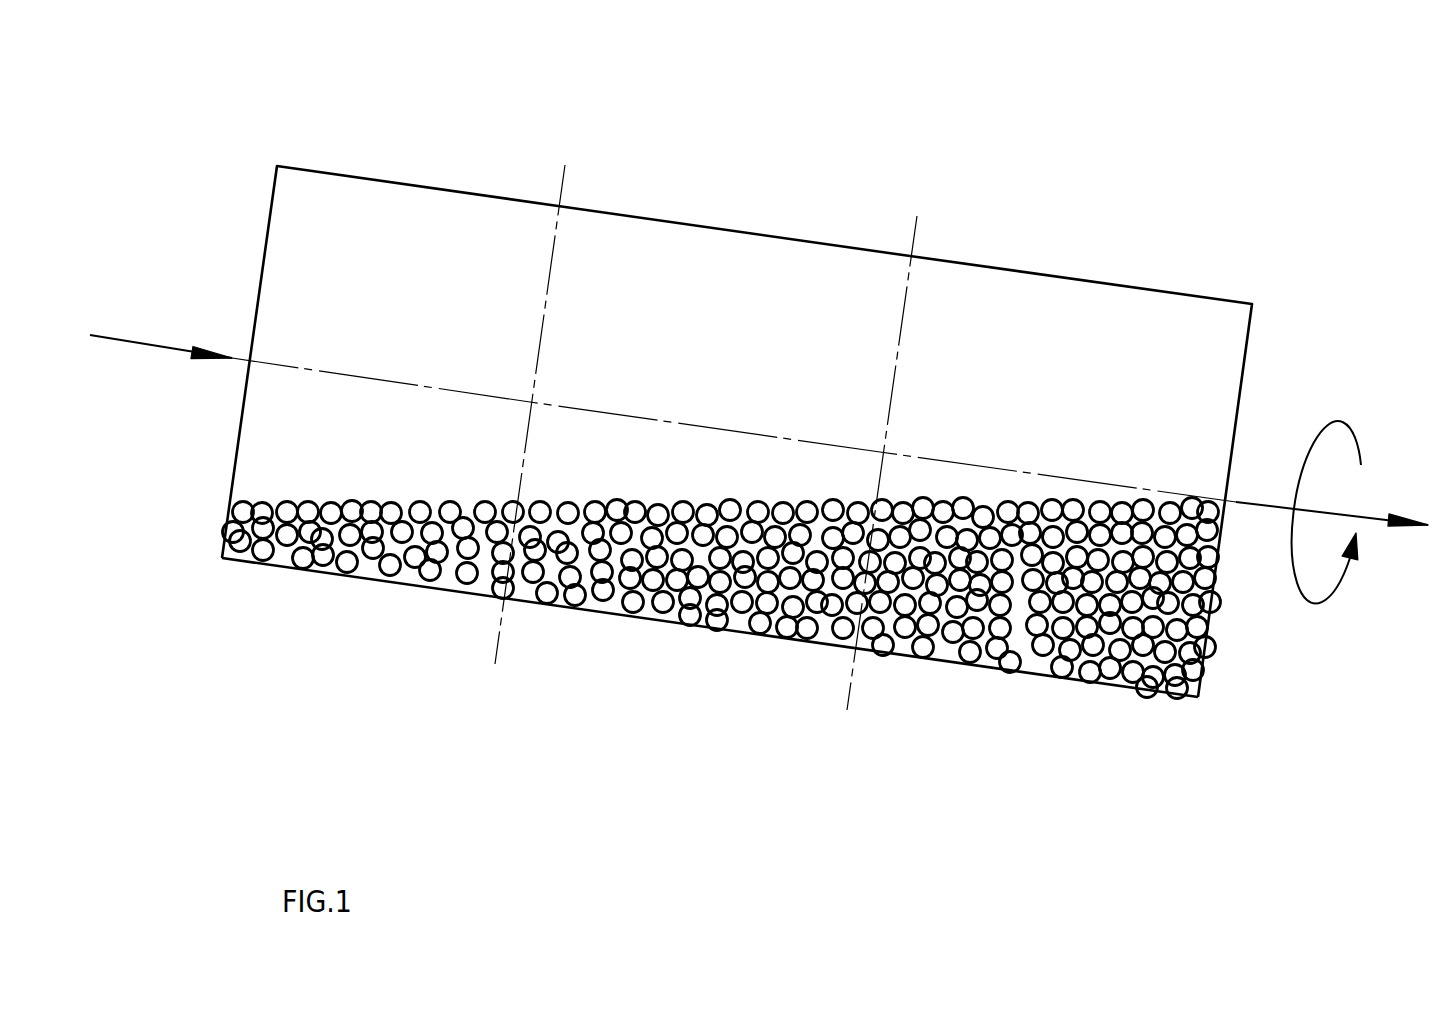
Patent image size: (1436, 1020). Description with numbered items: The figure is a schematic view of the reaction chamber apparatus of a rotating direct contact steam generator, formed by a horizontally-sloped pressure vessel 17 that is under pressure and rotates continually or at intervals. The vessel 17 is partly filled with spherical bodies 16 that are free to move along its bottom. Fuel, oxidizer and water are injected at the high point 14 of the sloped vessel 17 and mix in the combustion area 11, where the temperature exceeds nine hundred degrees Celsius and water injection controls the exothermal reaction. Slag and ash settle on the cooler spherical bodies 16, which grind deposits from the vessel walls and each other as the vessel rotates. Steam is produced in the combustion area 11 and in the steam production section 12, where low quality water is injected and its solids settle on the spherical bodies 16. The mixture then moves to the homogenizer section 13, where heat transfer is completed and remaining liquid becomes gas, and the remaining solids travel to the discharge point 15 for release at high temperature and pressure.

The combustion area 11 is at (390, 213).
The steam production section 12 is at (771, 274).
The homogenizer section 13 is at (1105, 313).
The high point 14 is at (142, 343).
The discharge point 15 is at (1259, 503).
The spherical bodies 16 is at (373, 557).
The pressure vessel 17 is at (600, 612).